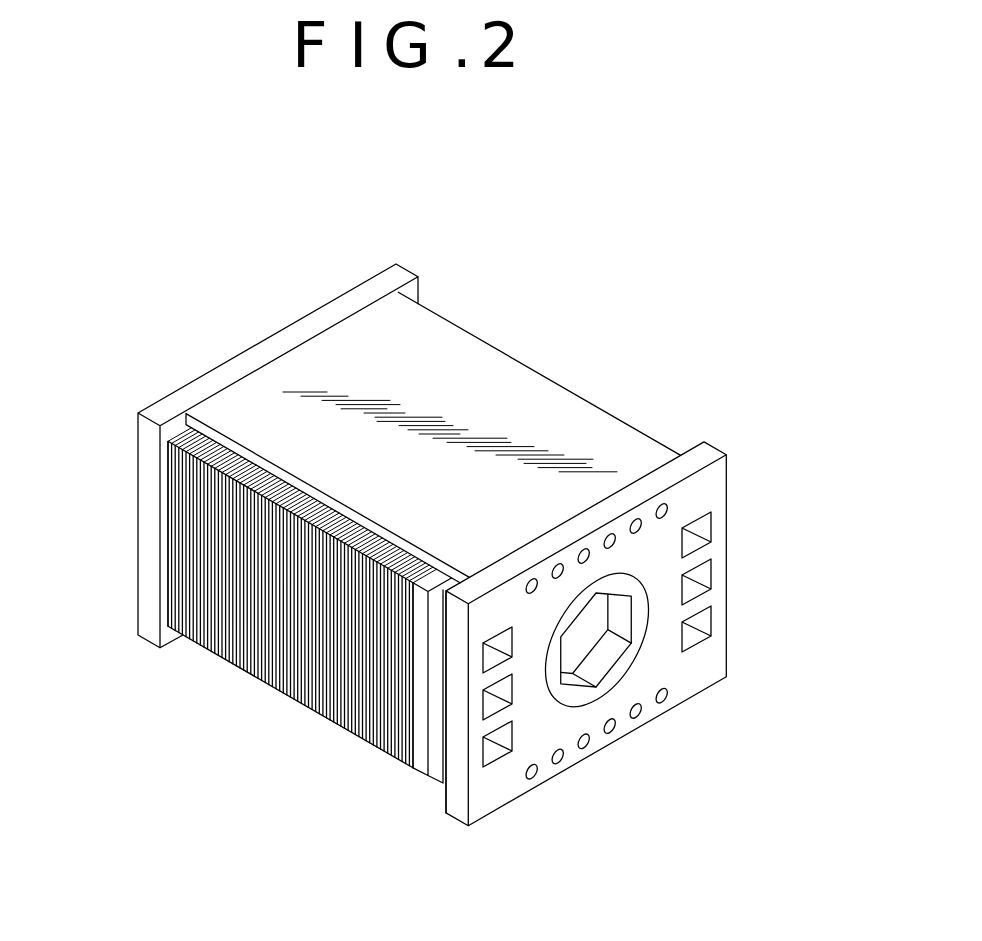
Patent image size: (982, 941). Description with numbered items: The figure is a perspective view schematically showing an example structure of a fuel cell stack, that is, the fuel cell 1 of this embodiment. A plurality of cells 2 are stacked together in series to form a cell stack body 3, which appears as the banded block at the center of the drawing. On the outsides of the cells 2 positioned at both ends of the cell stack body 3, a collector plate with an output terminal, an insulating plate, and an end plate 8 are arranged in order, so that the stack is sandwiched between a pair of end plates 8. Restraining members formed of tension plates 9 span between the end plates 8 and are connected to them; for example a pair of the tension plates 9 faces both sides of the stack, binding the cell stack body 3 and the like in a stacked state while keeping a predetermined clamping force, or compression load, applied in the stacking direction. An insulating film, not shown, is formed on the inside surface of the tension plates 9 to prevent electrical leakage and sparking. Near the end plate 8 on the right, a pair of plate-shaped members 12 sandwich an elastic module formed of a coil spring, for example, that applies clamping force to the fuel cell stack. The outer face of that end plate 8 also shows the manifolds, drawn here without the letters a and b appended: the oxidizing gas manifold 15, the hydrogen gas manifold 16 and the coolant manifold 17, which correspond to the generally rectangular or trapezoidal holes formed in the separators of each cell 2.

The fuel cell 1 is at (140, 378).
The cell 2 is at (337, 707).
The cell stack body 3 is at (302, 609).
The end plate 8 is at (407, 268).
The tension plate 9 is at (500, 393).
The plate-shaped member 12 is at (435, 772).
The oxidizing gas manifold 15 is at (511, 626).
The hydrogen gas manifold 16 is at (490, 757).
The coolant manifold 17 is at (485, 697).